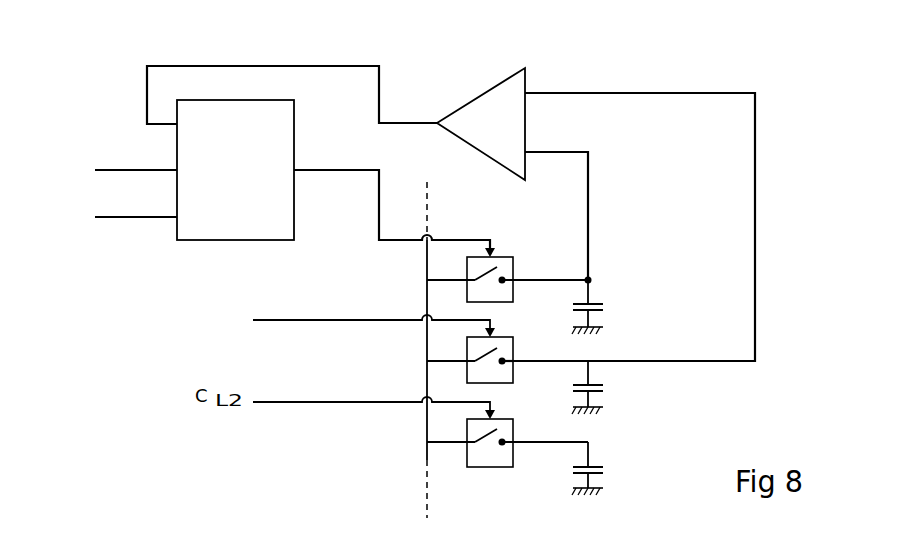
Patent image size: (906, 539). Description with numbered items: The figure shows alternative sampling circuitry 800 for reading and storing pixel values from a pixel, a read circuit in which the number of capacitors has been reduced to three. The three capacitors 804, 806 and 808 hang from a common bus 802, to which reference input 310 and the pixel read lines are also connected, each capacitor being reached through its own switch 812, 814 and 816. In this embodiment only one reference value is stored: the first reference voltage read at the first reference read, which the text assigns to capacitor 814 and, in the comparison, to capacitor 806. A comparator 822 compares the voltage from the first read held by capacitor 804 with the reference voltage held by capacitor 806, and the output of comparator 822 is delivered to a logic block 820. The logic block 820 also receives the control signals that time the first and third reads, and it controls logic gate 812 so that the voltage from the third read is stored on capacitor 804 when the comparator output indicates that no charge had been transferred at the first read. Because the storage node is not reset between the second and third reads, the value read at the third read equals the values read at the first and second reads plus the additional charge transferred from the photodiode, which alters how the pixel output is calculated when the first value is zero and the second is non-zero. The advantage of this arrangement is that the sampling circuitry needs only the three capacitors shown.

The sampling circuitry 800 is at (101, 71).
The signal bus line 802 is at (426, 462).
The reference signal input line 310 is at (426, 295).
The logic gate 812 is at (545, 243).
The capacitor 814 is at (543, 325).
The third switch 816 is at (543, 408).
The capacitor 804 is at (603, 302).
The capacitor 806 is at (604, 381).
The capacitor 808 is at (591, 462).
The logic block 820 is at (282, 118).
The comparator 822 is at (527, 89).